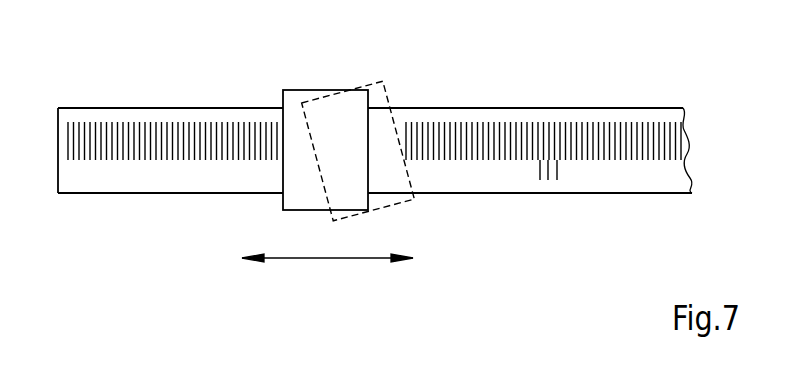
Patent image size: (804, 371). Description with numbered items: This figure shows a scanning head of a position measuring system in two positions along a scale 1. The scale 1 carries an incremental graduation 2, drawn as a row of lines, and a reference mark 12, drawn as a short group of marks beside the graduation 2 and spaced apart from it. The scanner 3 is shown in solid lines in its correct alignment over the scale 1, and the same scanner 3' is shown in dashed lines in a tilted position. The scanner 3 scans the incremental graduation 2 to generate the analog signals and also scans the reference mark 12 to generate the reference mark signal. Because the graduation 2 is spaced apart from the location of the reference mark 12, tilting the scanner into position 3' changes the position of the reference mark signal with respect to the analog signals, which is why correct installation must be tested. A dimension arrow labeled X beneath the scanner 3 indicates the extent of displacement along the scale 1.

The scale 1 is at (617, 108).
The incremental graduation 2 is at (675, 140).
The scanner 3 is at (295, 127).
The tilted scanner 3' is at (358, 116).
The reference mark 12 is at (545, 173).
The displacement distance X is at (327, 274).